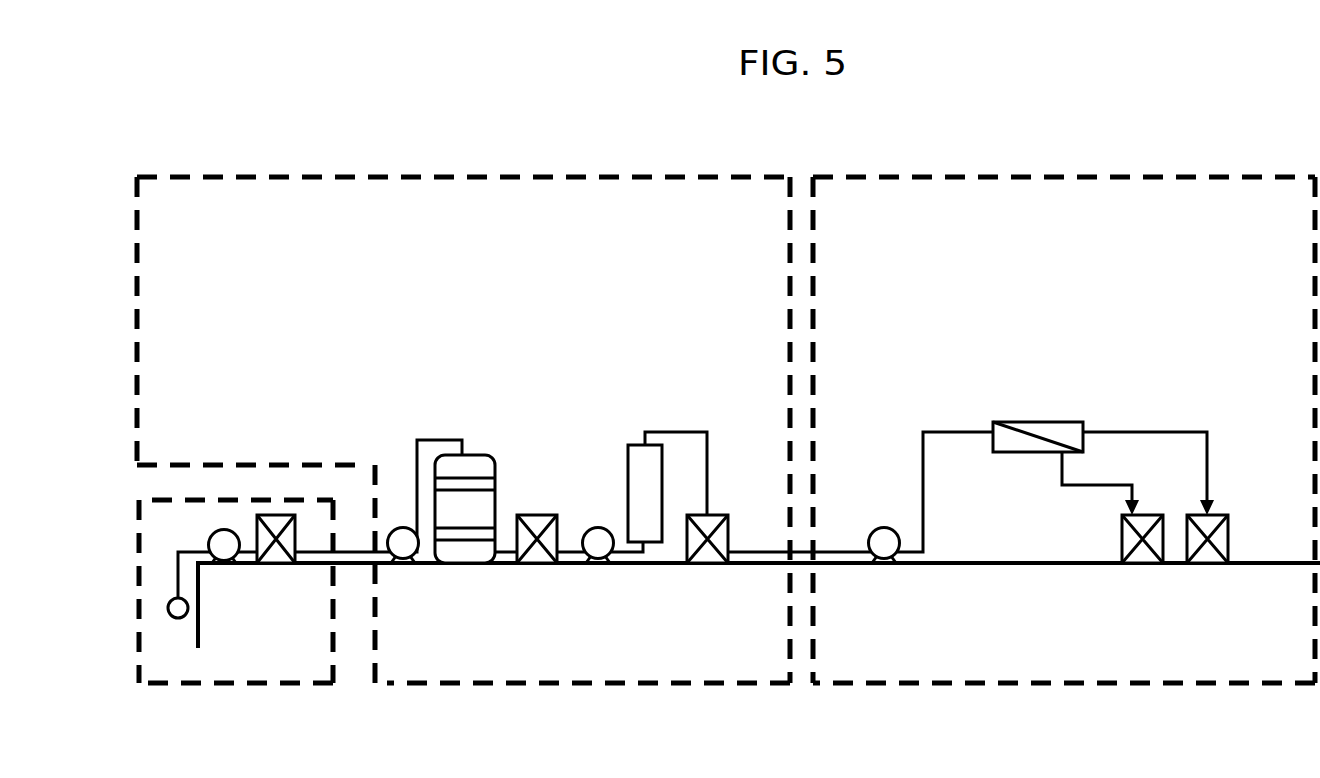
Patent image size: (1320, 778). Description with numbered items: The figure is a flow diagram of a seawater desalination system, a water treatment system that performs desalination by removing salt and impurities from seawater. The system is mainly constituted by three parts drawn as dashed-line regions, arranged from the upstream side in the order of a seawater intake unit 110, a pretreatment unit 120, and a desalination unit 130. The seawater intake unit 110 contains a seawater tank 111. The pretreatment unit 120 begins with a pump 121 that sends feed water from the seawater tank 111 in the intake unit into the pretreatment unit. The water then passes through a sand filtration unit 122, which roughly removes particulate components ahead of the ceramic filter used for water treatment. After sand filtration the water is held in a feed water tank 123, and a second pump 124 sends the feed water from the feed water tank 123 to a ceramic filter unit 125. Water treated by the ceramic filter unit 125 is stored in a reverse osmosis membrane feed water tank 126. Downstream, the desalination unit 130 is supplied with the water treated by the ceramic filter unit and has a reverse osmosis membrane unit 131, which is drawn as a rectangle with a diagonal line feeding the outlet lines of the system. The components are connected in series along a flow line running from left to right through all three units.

The seawater intake unit 110 is at (172, 683).
The seawater tank 111 is at (278, 568).
The pretreatment unit 120 is at (507, 684).
The pump 121 is at (400, 568).
The sand filtration unit 122 is at (460, 568).
The feed water tank 123 is at (523, 568).
The pump 124 is at (597, 568).
The ceramic filter unit 125 is at (653, 527).
The reverse osmosis membrane feed water tank 126 is at (703, 568).
The desalination unit 130 is at (902, 684).
The reverse osmosis membrane unit 131 is at (1042, 453).